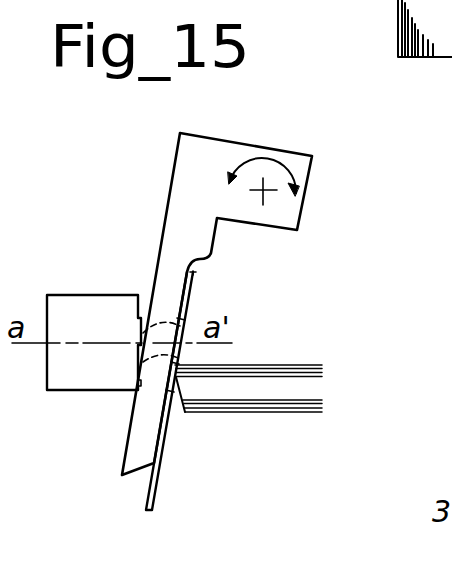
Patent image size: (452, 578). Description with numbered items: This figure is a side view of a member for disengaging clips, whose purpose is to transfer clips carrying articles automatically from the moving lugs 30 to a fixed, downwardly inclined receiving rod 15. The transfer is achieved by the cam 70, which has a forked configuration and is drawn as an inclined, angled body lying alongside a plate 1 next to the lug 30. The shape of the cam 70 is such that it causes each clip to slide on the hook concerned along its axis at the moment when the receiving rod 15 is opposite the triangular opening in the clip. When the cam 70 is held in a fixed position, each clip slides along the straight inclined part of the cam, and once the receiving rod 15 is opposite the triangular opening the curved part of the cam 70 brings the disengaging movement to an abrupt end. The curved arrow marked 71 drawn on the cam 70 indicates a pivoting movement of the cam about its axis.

The cam 70 is at (184, 167).
The pivot axis / rotation direction 71 is at (261, 157).
The plate 1 is at (158, 492).
The lug 30 is at (85, 300).
The receiving rod 15 is at (215, 390).